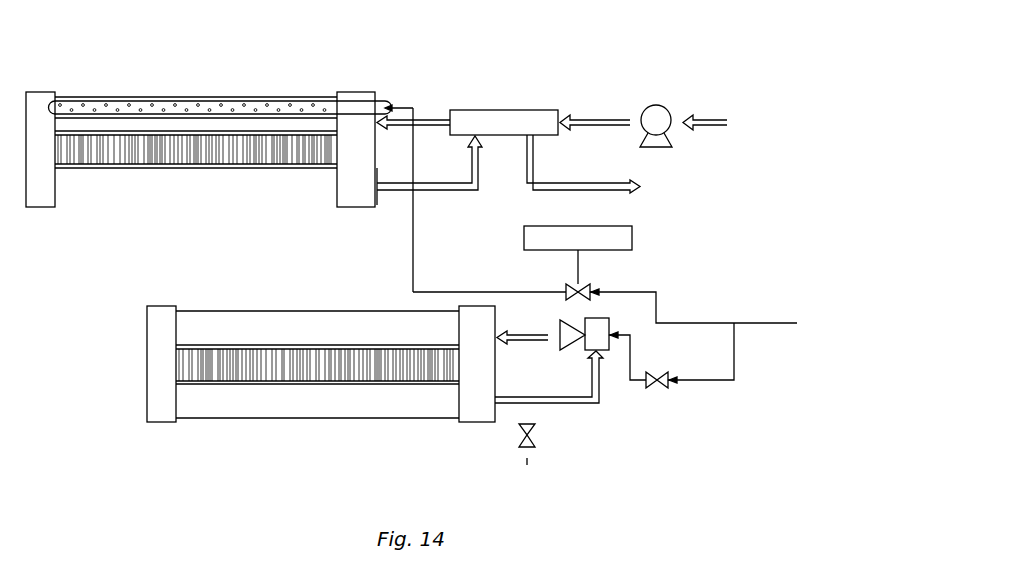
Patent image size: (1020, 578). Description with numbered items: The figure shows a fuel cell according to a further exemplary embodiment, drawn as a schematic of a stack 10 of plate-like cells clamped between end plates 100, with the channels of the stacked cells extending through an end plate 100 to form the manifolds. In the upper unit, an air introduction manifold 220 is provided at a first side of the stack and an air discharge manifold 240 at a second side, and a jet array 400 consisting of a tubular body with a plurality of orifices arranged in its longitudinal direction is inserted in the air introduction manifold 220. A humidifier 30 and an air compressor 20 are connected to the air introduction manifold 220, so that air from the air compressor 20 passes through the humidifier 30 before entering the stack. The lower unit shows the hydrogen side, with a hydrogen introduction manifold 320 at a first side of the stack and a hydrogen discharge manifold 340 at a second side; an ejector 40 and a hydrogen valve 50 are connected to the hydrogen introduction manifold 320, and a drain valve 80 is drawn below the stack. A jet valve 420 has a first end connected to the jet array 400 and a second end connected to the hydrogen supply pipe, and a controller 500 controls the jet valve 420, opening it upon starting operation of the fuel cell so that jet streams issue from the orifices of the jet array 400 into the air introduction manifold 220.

The heat exchanger unit 10 is at (209, 147).
The air compressor 20 is at (656, 104).
The humidifier 30 is at (504, 108).
The ejector 40 is at (609, 352).
The hydrogen valve 50 is at (668, 386).
The drain valve 80 is at (520, 430).
The end plate 100 is at (356, 190).
The air introduction manifold 220 is at (136, 100).
The air discharge manifold 240 is at (222, 190).
The hydrogen introduction manifold 320 is at (283, 328).
The hydrogen discharge manifold 340 is at (345, 406).
The jet array 400 is at (318, 100).
The jet valve 420 is at (594, 286).
The controller 500 is at (634, 240).